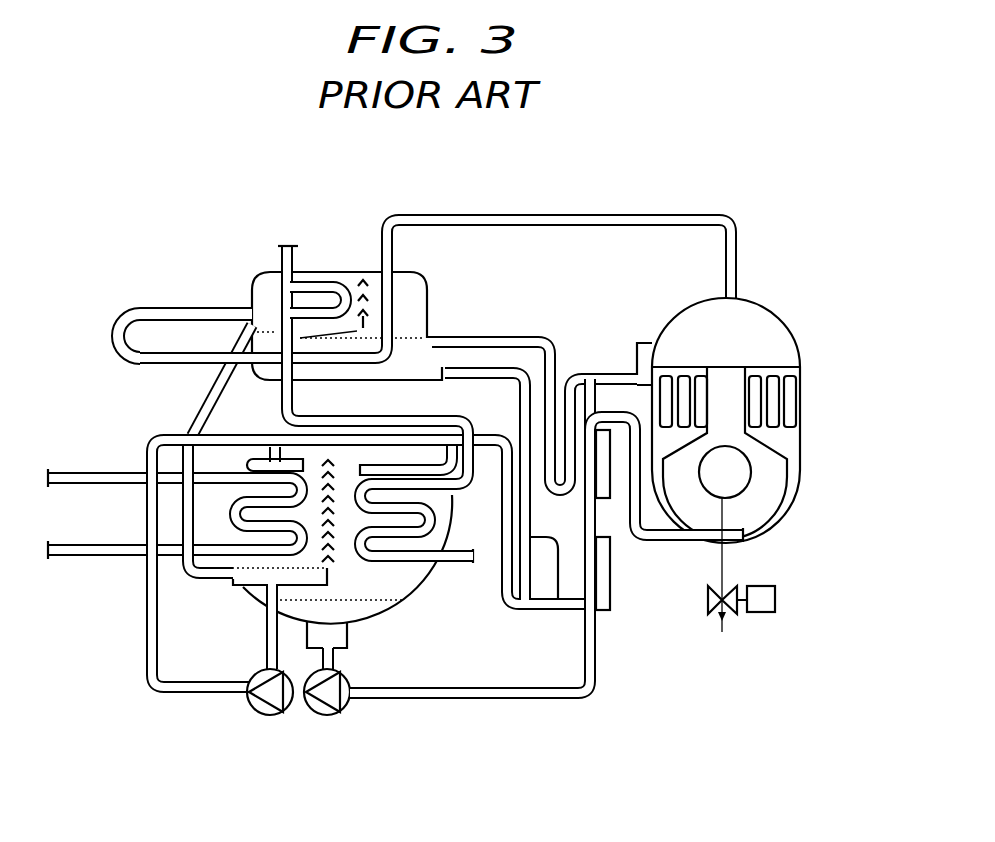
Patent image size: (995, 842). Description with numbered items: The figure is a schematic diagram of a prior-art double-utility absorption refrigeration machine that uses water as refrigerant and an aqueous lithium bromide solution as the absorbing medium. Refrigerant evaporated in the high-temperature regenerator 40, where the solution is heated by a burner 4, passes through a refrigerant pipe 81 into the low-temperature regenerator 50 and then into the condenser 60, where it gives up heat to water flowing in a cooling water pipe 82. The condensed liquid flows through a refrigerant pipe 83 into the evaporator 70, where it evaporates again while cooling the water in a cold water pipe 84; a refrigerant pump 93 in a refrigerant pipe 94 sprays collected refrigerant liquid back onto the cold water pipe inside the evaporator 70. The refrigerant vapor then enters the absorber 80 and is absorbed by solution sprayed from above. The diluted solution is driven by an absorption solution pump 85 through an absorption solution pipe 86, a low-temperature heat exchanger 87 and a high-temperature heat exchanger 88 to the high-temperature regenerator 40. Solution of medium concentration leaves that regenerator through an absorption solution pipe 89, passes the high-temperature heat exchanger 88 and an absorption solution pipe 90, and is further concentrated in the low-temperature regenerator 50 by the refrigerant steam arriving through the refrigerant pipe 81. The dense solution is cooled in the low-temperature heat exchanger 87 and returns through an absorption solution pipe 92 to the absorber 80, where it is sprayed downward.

The burner 4 is at (752, 477).
The high-temperature regenerator 40 is at (800, 437).
The low-temperature regenerator 50 is at (413, 290).
The condenser 60 is at (265, 287).
The evaporator 70 is at (220, 468).
The absorber 80 is at (385, 582).
The refrigerant pipe 81 is at (578, 213).
The cooling water pipe 82 is at (470, 562).
The refrigerant pipe 83 is at (192, 412).
The cold water pipe 84 is at (104, 560).
The absorption solution pump 85 is at (333, 716).
The absorption solution pipe 86 is at (510, 702).
The low-temperature heat exchanger 87 is at (612, 595).
The high-temperature heat exchanger 88 is at (605, 500).
The absorption solution pipe 89 is at (597, 373).
The absorption solution pipe 90 is at (515, 333).
The absorption solution pipe 92 is at (537, 612).
The refrigerant pump 93 is at (262, 716).
The refrigerant pipe 94 is at (165, 697).